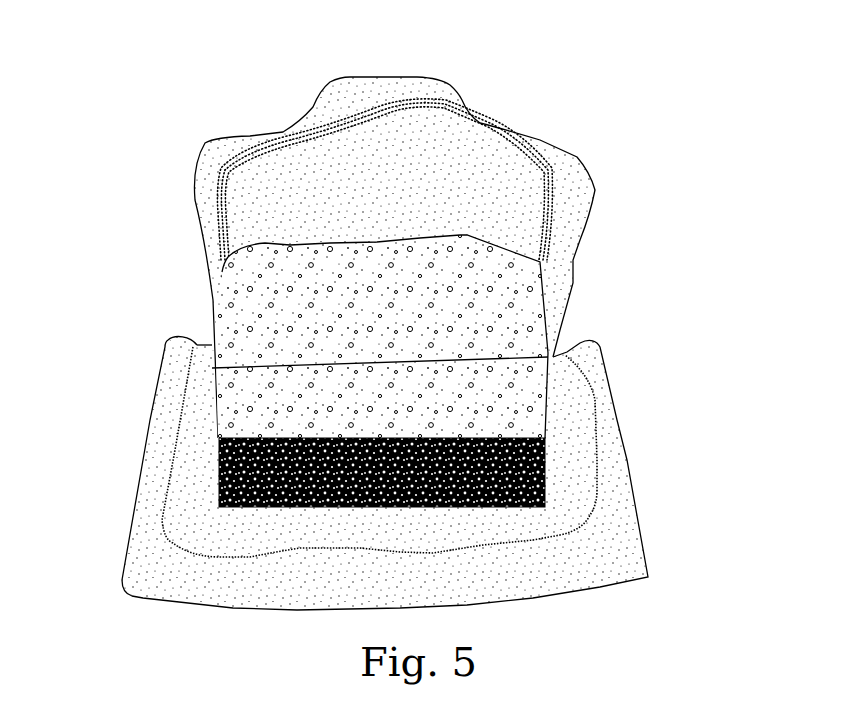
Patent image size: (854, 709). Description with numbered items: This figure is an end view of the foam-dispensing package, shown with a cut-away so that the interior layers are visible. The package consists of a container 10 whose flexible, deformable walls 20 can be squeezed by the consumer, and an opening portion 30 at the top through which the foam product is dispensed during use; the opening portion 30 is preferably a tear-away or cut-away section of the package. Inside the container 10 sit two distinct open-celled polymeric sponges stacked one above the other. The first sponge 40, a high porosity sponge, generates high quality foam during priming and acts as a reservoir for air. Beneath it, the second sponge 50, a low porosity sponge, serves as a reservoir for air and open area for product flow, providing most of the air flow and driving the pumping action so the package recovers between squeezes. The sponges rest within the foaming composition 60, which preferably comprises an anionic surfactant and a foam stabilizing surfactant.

The container 10 is at (569, 103).
The flexible, deformable walls 20 is at (502, 212).
The opening portion 30 is at (383, 112).
The first sponge 40 is at (253, 327).
The second sponge 50 is at (218, 469).
The foaming composition 60 is at (570, 502).